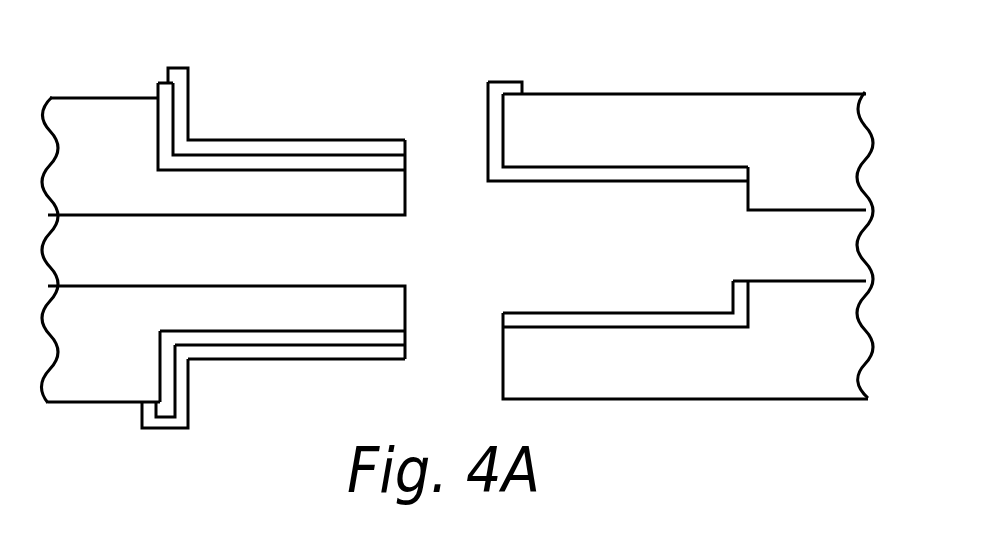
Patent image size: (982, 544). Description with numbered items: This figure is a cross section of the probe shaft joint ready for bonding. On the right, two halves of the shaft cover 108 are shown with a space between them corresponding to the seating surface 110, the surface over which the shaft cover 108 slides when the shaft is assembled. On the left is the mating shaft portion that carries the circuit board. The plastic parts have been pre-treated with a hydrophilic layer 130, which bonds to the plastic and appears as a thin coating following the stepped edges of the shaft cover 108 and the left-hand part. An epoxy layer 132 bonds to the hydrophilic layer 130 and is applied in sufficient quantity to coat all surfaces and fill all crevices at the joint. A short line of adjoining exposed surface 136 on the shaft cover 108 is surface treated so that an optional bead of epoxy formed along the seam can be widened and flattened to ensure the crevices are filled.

The shaft cover 108 is at (743, 93).
The seating surface 110 is at (492, 237).
The hydrophilic layer 130 is at (222, 162).
The epoxy layer 132 is at (335, 141).
The adjoining exposed surface 136 is at (505, 81).